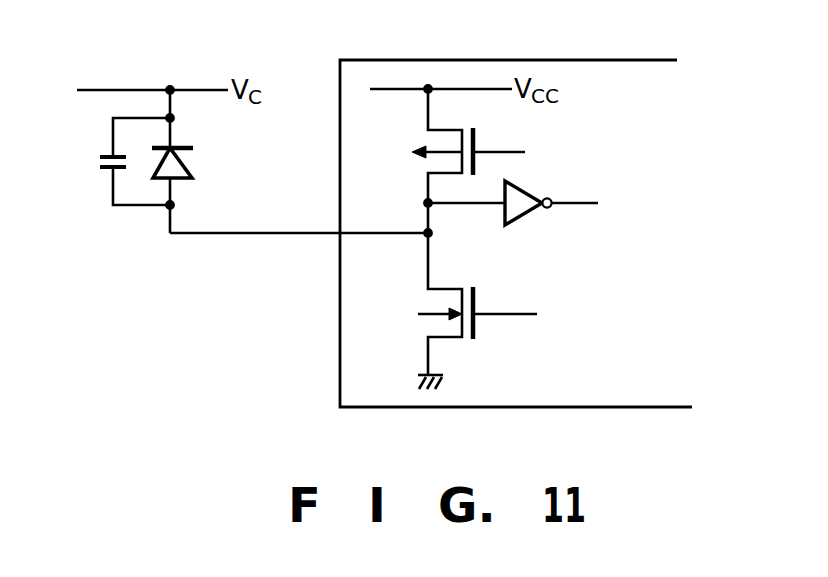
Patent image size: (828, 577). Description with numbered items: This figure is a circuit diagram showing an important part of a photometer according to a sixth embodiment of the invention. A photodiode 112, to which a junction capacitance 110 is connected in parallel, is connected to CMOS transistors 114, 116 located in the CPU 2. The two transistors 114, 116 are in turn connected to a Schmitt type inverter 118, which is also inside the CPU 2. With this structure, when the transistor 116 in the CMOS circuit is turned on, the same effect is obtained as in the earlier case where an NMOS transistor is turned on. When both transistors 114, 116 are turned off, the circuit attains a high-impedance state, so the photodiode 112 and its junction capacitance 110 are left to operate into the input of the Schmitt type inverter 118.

The CPU 2 is at (513, 58).
The junction capacitance 110 is at (98, 175).
The photodiode 112 is at (187, 160).
The CMOS transistor 114 is at (480, 143).
The CMOS transistor 116 is at (480, 302).
The Schmitt type inverter 118 is at (538, 195).